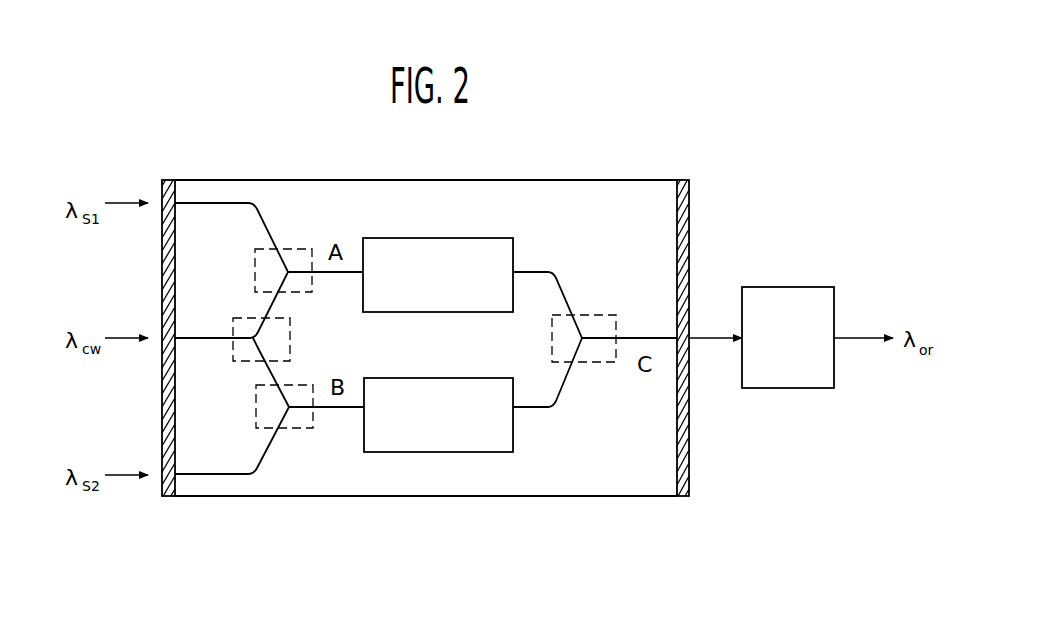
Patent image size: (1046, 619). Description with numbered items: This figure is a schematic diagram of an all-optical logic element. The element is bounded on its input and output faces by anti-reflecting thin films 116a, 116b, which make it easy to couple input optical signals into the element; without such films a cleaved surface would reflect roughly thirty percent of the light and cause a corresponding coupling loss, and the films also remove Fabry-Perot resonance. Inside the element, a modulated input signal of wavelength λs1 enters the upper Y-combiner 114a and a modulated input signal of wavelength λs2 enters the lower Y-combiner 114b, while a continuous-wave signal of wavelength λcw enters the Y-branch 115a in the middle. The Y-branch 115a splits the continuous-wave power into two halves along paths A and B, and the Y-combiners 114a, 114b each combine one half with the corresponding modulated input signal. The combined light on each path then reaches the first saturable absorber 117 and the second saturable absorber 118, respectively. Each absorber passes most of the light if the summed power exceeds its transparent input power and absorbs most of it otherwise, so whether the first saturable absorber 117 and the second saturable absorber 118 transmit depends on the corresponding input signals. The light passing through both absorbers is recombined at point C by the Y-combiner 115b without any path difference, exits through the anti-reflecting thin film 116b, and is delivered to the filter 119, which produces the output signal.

The Y-combiner 114a is at (255, 271).
The Y-combiner 114b is at (256, 406).
The Y-branch 115a is at (292, 339).
The Y-combiner 115b is at (580, 315).
The anti-reflecting thin film 116a is at (173, 496).
The anti-reflecting thin film 116b is at (686, 496).
The first saturable absorber 117 is at (423, 238).
The second saturable absorber 118 is at (424, 378).
The filter 119 is at (768, 290).